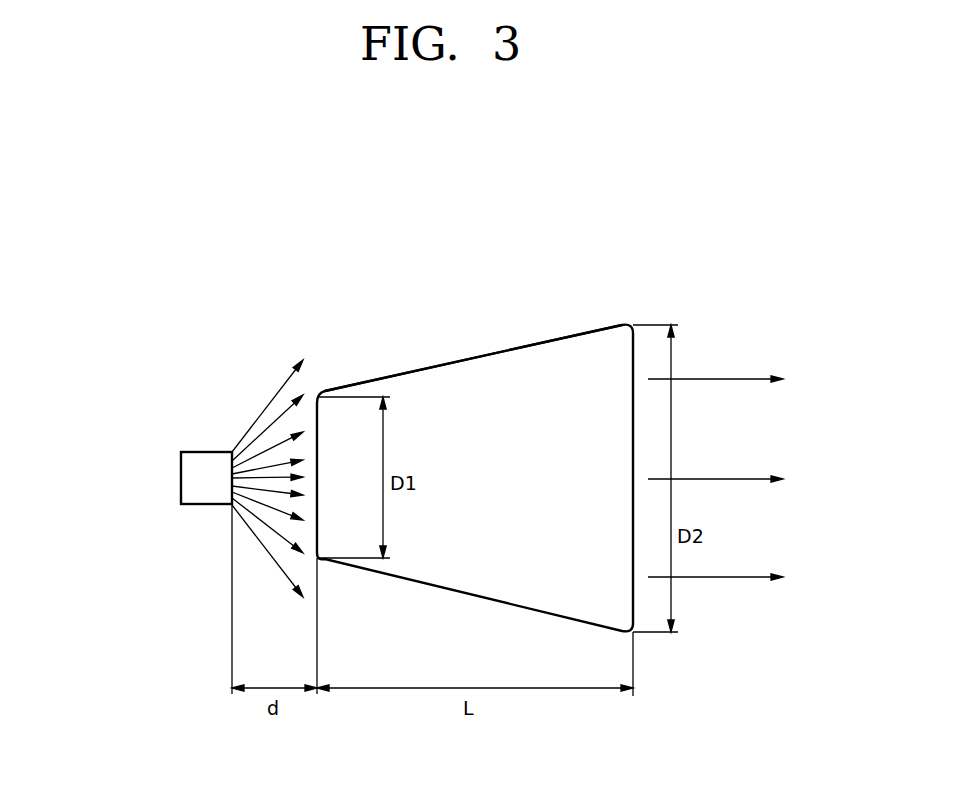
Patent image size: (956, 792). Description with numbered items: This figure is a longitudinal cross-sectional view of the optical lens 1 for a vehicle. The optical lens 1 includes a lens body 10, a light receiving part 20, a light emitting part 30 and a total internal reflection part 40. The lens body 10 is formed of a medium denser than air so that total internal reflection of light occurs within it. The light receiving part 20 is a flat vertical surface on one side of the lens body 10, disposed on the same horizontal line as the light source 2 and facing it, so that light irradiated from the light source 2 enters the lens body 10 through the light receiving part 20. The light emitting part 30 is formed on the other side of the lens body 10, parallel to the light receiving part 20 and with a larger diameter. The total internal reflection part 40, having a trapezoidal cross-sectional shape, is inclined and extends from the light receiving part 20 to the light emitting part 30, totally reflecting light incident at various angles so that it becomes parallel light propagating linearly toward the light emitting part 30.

The optical lens 1 is at (531, 415).
The light source 2 is at (190, 472).
The lens body 10 is at (452, 413).
The light receiving part 20 is at (317, 460).
The light emitting part 30 is at (633, 427).
The total internal reflection part 40 is at (543, 342).